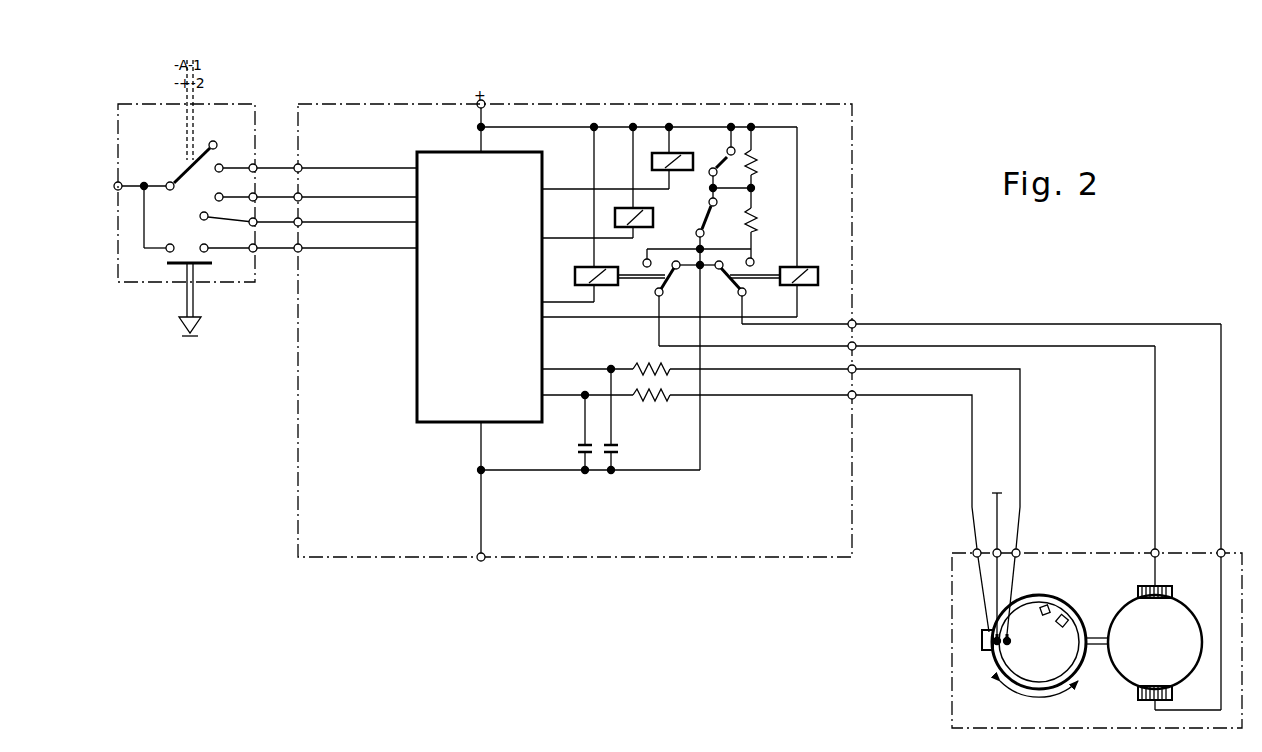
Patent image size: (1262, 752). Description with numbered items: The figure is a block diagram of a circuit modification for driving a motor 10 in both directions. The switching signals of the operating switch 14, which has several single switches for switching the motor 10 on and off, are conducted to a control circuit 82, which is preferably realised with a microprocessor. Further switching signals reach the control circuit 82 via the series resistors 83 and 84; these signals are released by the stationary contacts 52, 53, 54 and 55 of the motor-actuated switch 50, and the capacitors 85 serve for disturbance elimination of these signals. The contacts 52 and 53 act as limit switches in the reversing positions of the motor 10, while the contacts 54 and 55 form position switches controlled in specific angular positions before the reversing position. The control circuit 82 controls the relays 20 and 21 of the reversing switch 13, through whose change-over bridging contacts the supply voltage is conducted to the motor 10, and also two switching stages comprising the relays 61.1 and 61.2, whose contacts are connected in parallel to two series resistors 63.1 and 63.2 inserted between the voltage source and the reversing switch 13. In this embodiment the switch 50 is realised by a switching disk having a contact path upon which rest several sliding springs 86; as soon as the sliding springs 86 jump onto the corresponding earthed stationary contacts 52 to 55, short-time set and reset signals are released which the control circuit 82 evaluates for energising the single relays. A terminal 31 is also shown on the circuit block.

The motor 10 is at (1183, 637).
The reversing switch 13 is at (717, 326).
The operating switch 14 is at (243, 121).
The switching relay 20 is at (607, 280).
The switching relay 21 is at (800, 284).
The ground terminal 31 is at (479, 509).
The switch 50 is at (1015, 652).
The stationary contact 52 is at (984, 647).
The stationary contact 53 is at (1068, 622).
The stationary contact 54 is at (985, 620).
The stationary contact 55 is at (1047, 608).
The relay 61.1 is at (612, 215).
The relay 61.2 is at (661, 152).
The series resistor 63.1 is at (753, 152).
The series resistor 63.2 is at (762, 228).
The control circuit 82 is at (417, 325).
The series resistor 83 is at (662, 365).
The series resistor 84 is at (652, 400).
The capacitor 85 is at (577, 452).
The sliding spring 86 is at (1012, 575).